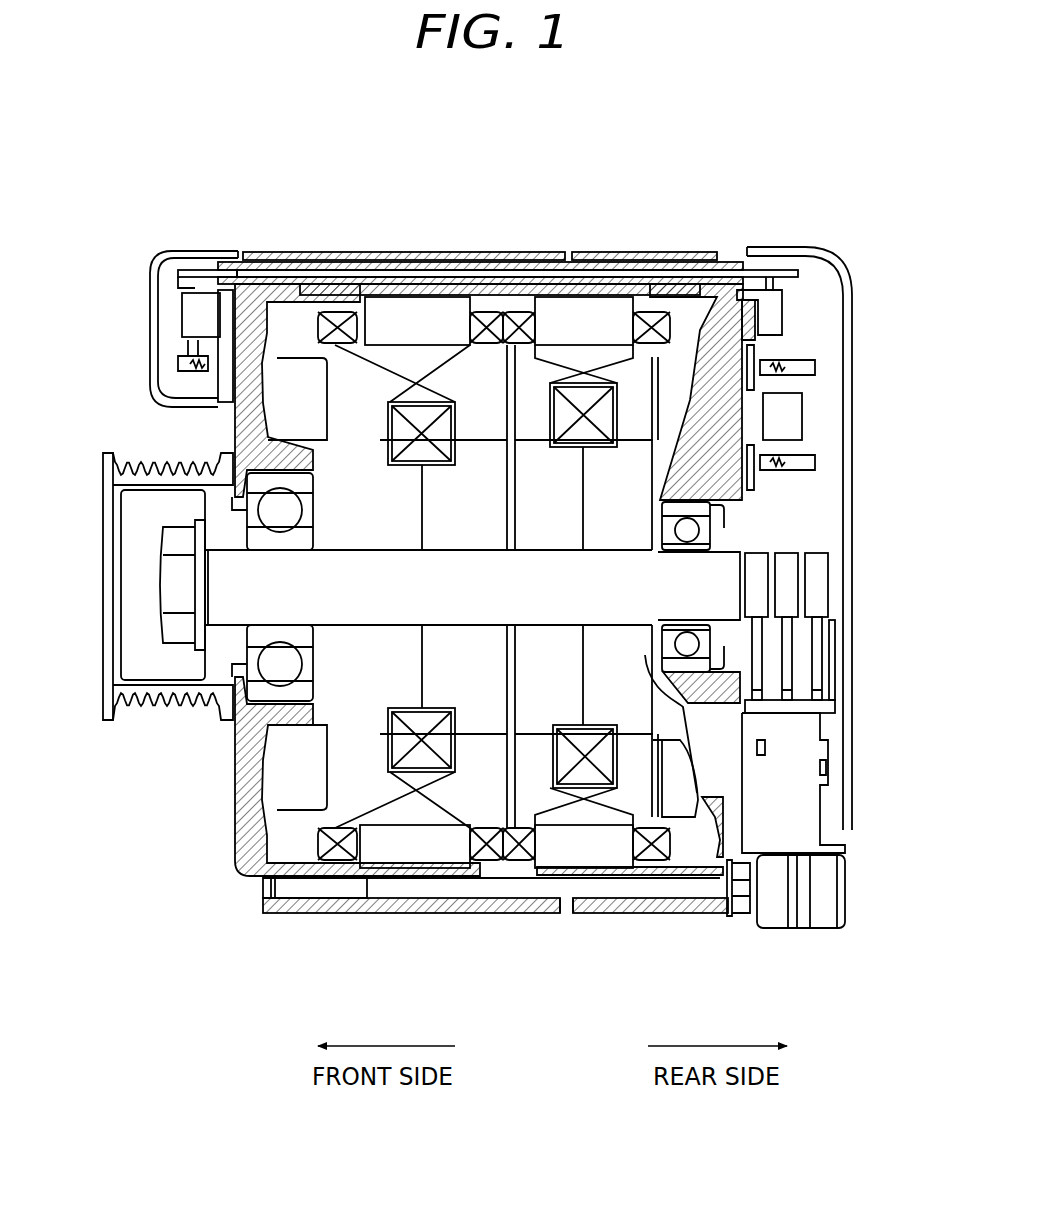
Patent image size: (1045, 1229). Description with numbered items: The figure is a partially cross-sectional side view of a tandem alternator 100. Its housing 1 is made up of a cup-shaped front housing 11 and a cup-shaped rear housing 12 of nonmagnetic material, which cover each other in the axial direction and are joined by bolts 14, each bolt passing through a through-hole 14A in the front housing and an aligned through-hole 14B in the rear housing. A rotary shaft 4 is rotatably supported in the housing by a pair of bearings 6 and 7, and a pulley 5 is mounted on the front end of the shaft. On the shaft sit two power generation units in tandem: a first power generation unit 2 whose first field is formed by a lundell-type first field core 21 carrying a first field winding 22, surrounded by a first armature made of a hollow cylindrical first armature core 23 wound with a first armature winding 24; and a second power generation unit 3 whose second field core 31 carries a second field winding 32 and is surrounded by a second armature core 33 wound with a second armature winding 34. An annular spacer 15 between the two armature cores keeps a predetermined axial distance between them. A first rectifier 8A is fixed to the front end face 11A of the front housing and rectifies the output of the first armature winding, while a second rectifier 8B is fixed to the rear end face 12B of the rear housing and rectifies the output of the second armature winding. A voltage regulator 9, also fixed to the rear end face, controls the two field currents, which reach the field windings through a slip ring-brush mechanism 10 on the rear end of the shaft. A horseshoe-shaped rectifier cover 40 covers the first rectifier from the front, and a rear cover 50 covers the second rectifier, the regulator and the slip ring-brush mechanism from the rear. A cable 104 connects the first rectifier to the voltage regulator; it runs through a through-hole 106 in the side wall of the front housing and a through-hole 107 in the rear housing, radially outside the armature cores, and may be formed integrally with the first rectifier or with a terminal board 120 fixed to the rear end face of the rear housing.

The tandem alternator 100 is at (143, 158).
The housing 1 is at (211, 431).
The first power generation unit 2 is at (413, 916).
The second power generation unit 3 is at (602, 916).
The rotary shaft 4 is at (290, 598).
The pulley 5 is at (140, 710).
The bearing 6 is at (265, 664).
The bearing 7 is at (690, 532).
The first rectifier 8A is at (186, 334).
The second rectifier 8B is at (814, 403).
The voltage regulator 9 is at (795, 803).
The slip ring-brush mechanism 10 is at (818, 660).
The front housing 11 is at (298, 913).
The front end face 11A is at (235, 262).
The rear housing 12 is at (710, 915).
The rear end face 12B is at (785, 302).
The bolt 14 is at (585, 893).
The through-hole 14A is at (540, 900).
The through-hole 14B is at (648, 900).
The annular spacer 15 is at (492, 279).
The first field core 21 is at (340, 787).
The first field winding 22 is at (400, 745).
The first armature core 23 is at (407, 318).
The first armature winding 24 is at (345, 852).
The second field core 31 is at (628, 465).
The second field winding 32 is at (600, 417).
The second armature core 33 is at (590, 330).
The second armature winding 34 is at (520, 852).
The rectifier cover 40 is at (167, 253).
The rear cover 50 is at (828, 250).
The cable 104 is at (770, 270).
The through-hole 106 is at (330, 254).
The through-hole 107 is at (655, 254).
The terminal board 120 is at (770, 322).